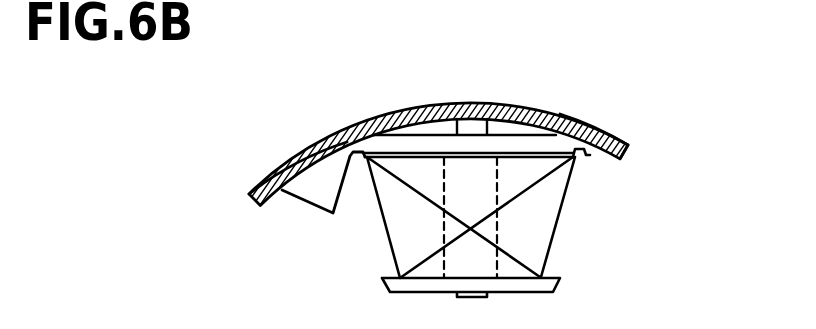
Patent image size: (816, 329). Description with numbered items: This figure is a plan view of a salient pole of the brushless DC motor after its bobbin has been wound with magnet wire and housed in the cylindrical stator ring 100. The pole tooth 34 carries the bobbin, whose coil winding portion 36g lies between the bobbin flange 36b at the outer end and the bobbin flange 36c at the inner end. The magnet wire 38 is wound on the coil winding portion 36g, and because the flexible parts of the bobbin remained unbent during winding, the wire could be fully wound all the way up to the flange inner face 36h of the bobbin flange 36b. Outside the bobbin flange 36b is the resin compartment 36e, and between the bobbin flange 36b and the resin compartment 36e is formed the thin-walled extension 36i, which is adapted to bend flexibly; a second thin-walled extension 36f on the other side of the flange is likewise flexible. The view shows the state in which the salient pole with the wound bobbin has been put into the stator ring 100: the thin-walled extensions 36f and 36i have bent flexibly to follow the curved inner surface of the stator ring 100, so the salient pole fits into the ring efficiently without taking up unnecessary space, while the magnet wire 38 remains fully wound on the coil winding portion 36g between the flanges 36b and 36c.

The cylindrical stator ring 100 is at (397, 110).
The pole tooth 34 is at (494, 133).
The bobbin flange 36b is at (538, 150).
The bobbin flange thin-walled extension 36i is at (347, 141).
The bobbin flange thin-walled extension 36f is at (597, 122).
The resin compartment 36e is at (320, 193).
The flange inner face 36h is at (527, 158).
The coil winding portion 36g is at (500, 218).
The bobbin flange 36c is at (548, 287).
The magnet wire 38 is at (405, 223).